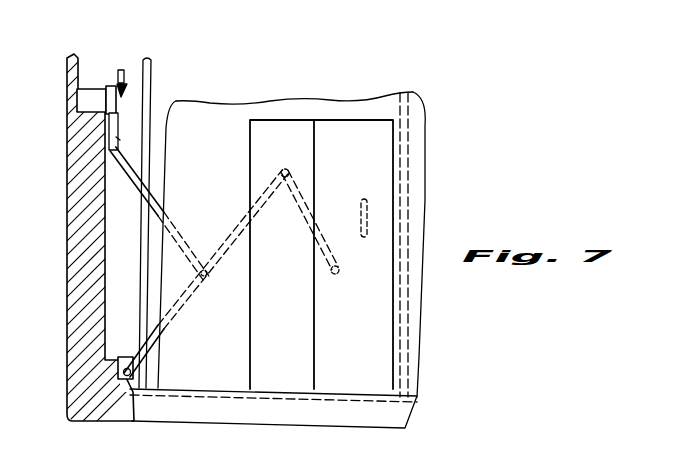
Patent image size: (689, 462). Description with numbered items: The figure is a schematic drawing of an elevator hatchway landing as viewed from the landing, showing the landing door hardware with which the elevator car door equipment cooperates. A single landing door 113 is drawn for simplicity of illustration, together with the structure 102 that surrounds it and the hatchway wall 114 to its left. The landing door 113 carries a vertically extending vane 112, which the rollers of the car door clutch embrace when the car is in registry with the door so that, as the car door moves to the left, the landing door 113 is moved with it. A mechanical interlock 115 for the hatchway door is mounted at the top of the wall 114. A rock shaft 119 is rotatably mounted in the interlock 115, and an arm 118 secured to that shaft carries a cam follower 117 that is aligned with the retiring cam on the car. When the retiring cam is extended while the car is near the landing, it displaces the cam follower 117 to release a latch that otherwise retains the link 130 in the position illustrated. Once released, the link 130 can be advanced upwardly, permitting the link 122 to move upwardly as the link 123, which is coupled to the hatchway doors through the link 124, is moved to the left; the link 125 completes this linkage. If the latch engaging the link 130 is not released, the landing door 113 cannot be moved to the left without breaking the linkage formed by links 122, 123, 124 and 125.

The door 102 is at (152, 77).
The vane 112 is at (361, 205).
The landing door 113 is at (250, 120).
The wall 114 is at (85, 89).
The mechanical interlock 115 is at (108, 88).
The cam follower 117 is at (121, 70).
The arm 118 is at (126, 86).
The rock shaft 119 is at (125, 117).
The link 122 is at (157, 200).
The link 123 is at (180, 307).
The link 124 is at (337, 266).
The link 125 is at (205, 277).
The link 130 is at (116, 137).